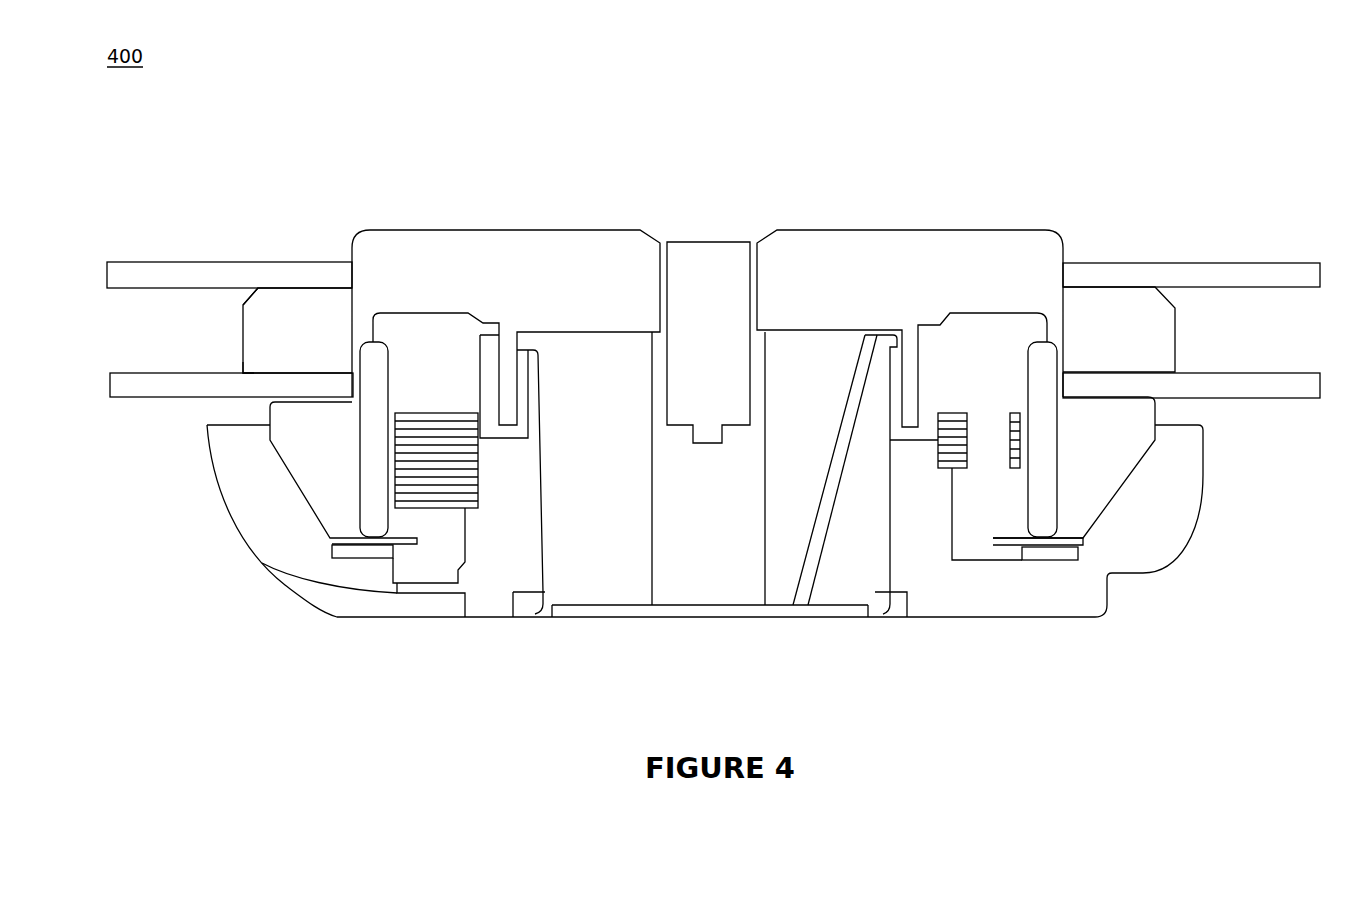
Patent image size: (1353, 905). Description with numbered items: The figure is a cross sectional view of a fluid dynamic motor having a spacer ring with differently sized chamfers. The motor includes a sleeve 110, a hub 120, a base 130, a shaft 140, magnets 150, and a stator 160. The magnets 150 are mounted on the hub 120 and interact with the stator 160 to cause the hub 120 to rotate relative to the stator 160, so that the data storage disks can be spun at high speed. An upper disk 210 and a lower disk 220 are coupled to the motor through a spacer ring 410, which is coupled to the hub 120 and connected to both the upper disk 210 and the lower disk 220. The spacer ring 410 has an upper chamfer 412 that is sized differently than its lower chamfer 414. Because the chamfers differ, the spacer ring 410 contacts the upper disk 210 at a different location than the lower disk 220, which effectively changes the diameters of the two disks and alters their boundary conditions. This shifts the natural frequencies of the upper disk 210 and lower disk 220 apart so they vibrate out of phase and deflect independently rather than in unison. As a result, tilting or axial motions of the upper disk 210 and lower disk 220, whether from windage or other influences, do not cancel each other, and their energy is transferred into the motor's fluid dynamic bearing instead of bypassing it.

The sleeve 110 is at (828, 417).
The hub 120 is at (907, 304).
The base 130 is at (982, 610).
The shaft 140 is at (726, 529).
The magnets 150 is at (1029, 336).
The stator 160 is at (439, 433).
The upper disk 210 is at (1273, 281).
The lower disk 220 is at (1298, 557).
The spacer ring 410 is at (1134, 357).
The upper chamfer 412 is at (260, 298).
The lower chamfer 414 is at (257, 355).